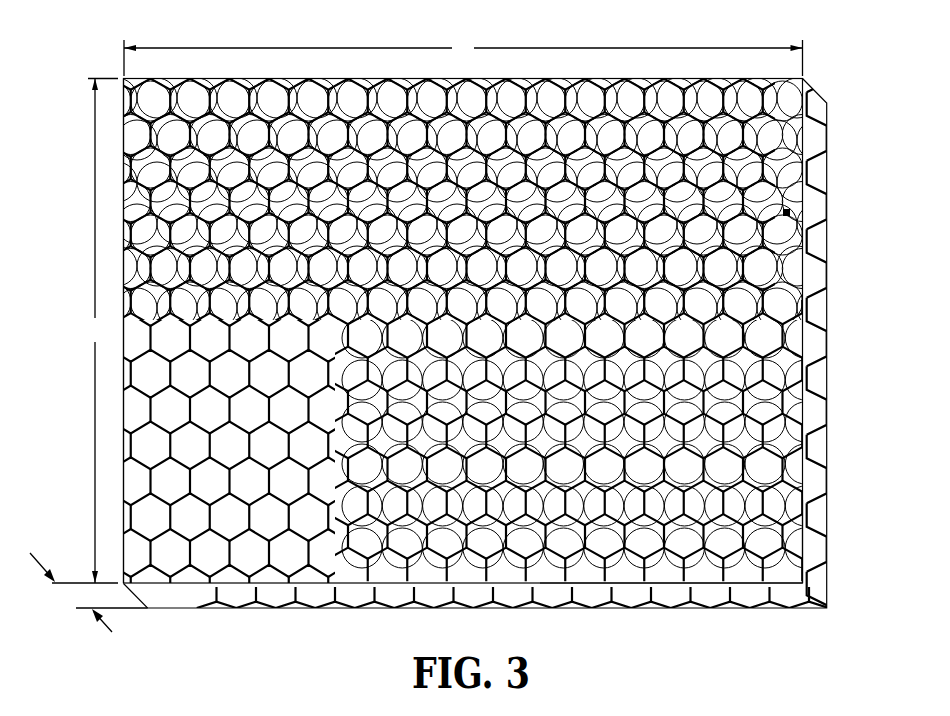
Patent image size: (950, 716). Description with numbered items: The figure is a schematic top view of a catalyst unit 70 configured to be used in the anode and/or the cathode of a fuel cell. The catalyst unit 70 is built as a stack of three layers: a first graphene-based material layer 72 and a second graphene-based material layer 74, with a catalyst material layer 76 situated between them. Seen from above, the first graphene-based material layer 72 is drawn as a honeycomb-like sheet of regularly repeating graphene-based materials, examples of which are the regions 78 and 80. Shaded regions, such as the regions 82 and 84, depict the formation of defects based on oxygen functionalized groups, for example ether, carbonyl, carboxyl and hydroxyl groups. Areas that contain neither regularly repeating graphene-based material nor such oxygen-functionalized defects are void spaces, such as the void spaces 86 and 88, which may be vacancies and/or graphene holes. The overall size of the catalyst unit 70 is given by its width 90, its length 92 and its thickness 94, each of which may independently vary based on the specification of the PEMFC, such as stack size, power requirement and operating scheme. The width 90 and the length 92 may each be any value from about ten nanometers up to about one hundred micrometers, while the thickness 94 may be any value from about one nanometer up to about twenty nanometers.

The catalyst unit 70 is at (857, 596).
The first graphene-based material layer 72 is at (155, 528).
The second graphene-based material layer 74 is at (820, 460).
The catalyst material layer 76 is at (406, 583).
The region 78 is at (201, 78).
The region 80 is at (789, 263).
The region 82 is at (823, 541).
The region 84 is at (657, 572).
The void space 86 is at (138, 440).
The void space 88 is at (556, 78).
The width 90 is at (389, 46).
The length 92 is at (95, 292).
The thickness 94 is at (92, 611).